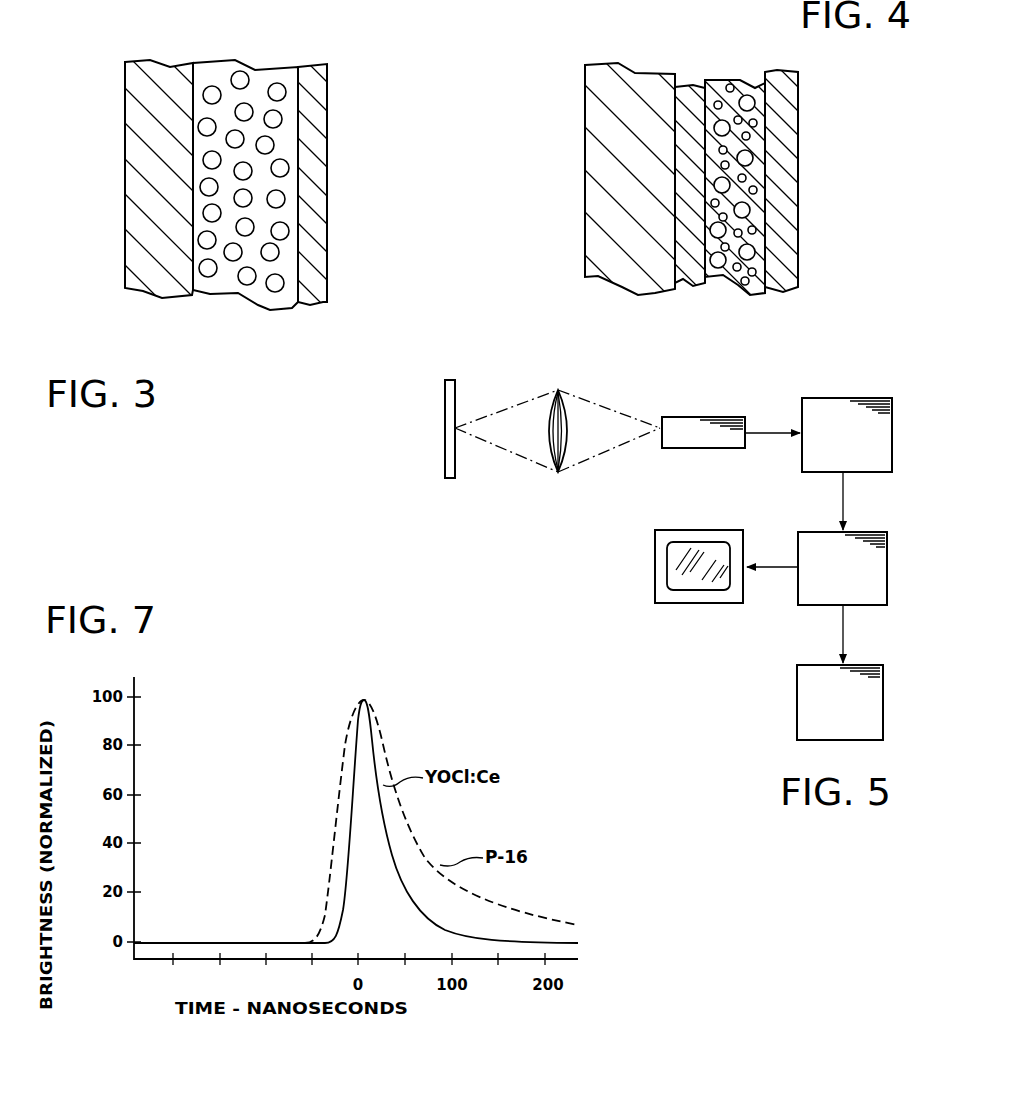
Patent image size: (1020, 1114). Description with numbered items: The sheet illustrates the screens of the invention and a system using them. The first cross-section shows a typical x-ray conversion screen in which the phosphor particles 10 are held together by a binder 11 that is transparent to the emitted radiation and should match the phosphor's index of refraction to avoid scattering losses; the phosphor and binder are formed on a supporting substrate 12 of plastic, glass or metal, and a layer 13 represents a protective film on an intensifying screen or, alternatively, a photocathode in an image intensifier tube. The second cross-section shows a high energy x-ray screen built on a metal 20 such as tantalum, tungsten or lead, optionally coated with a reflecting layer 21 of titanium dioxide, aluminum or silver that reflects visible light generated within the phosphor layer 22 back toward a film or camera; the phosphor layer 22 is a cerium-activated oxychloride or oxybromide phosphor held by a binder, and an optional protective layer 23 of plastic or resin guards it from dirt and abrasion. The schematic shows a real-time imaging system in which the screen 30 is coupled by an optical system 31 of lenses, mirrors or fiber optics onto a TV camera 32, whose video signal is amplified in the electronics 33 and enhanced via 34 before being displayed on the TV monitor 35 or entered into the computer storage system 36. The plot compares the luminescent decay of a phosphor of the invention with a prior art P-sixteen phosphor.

In FIG. 3, the phosphor particles 10 is at (255, 297).
In FIG. 3, the binder 11 is at (212, 297).
In FIG. 3, the supporting substrate 12 is at (137, 300).
In FIG. 3, the protective film 13 is at (318, 305).
In FIG. 4, the metal 20 is at (585, 145).
In FIG. 4, the reflecting layer 21 is at (686, 86).
In FIG. 4, the phosphor layer 22 is at (735, 80).
In FIG. 4, the protective layer 23 is at (798, 155).
In FIG. 5, the screen 30 is at (450, 380).
In FIG. 5, the optical system 31 is at (558, 390).
In FIG. 5, the TV camera 32 is at (705, 417).
In FIG. 5, the electronics 33 is at (855, 398).
In FIG. 5, the enhancement unit 34 is at (887, 575).
In FIG. 5, the TV monitor 35 is at (655, 567).
In FIG. 5, the computer storage system 36 is at (797, 705).